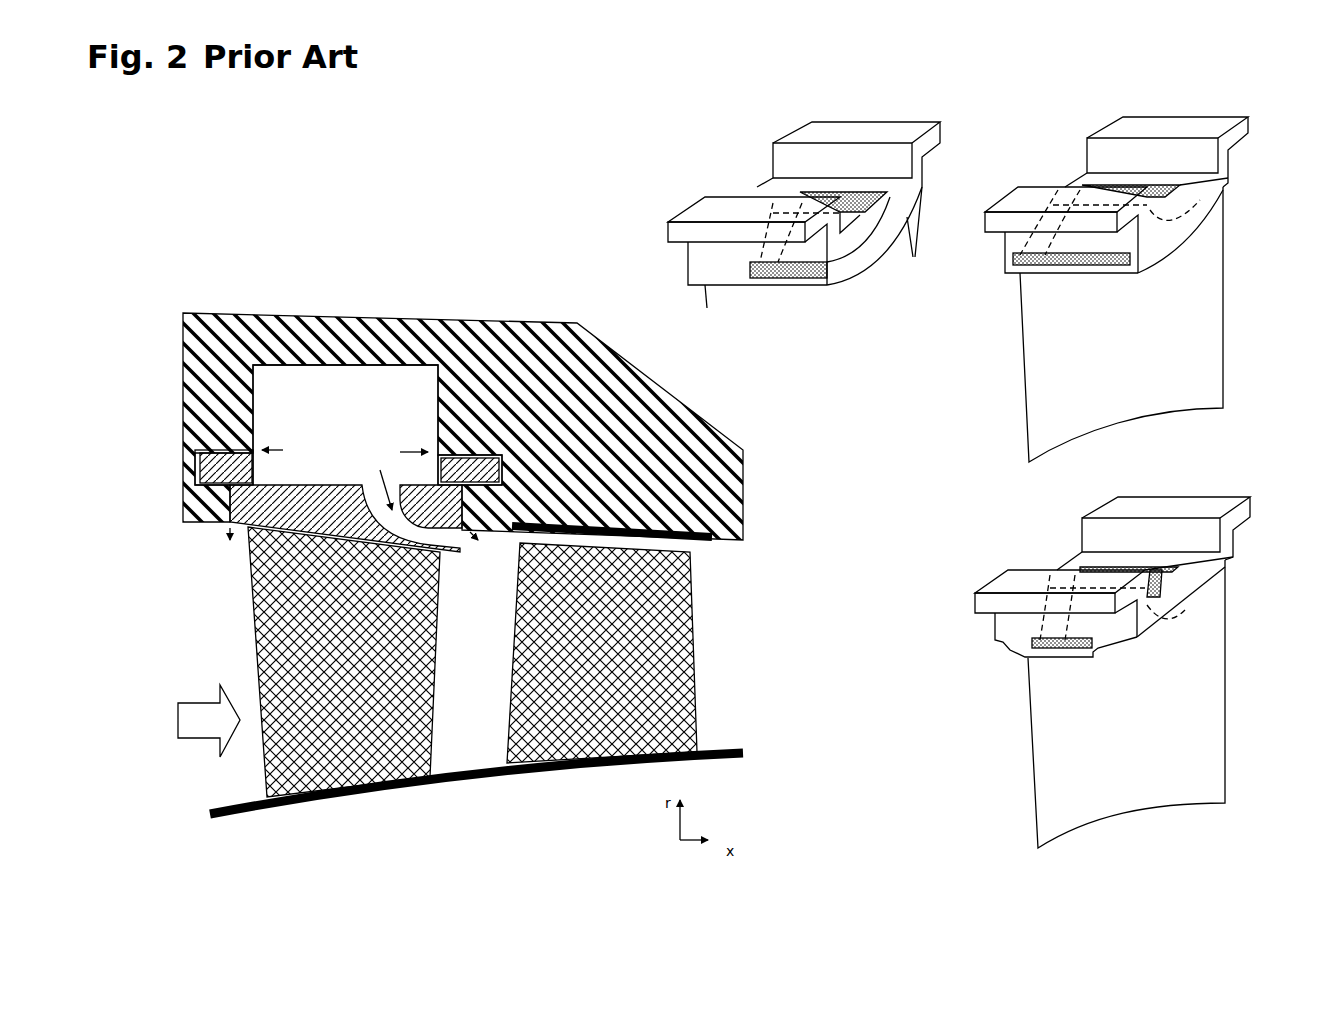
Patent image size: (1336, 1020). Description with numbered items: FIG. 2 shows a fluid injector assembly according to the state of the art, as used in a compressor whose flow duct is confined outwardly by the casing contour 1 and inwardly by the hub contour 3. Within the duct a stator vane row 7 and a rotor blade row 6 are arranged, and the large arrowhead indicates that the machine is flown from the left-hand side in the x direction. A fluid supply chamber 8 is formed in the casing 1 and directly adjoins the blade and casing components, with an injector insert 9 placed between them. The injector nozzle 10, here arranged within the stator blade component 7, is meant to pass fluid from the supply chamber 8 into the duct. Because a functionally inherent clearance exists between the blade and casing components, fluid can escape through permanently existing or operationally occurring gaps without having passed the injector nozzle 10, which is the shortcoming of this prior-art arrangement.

The casing contour 1 is at (490, 408).
The hub contour 3 is at (480, 780).
The rotor blade row 6 is at (645, 678).
The stator vane row 7 is at (303, 740).
The fluid supply chamber 8 is at (337, 408).
The injector insert 9 is at (248, 525).
The injector nozzle 10 is at (458, 553).